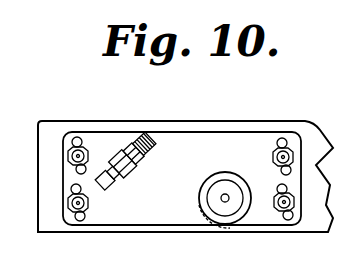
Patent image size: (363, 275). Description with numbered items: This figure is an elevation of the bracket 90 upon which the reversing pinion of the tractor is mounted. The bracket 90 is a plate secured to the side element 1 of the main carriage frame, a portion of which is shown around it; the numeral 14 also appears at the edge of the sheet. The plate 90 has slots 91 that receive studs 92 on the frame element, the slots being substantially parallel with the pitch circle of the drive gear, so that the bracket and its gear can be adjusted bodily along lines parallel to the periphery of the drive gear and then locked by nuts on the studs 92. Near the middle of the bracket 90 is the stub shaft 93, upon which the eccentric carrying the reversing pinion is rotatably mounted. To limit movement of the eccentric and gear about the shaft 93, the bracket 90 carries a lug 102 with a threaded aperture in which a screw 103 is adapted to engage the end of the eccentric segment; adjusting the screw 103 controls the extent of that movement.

The side element of the main carriage frame 1 is at (203, 121).
The casing 14 is at (9, 91).
The bracket 90 is at (183, 138).
The slots 91 is at (72, 146).
The studs 92 is at (82, 170).
The stub shaft 93 is at (236, 183).
The lug 102 is at (127, 175).
The screw 103 is at (152, 152).